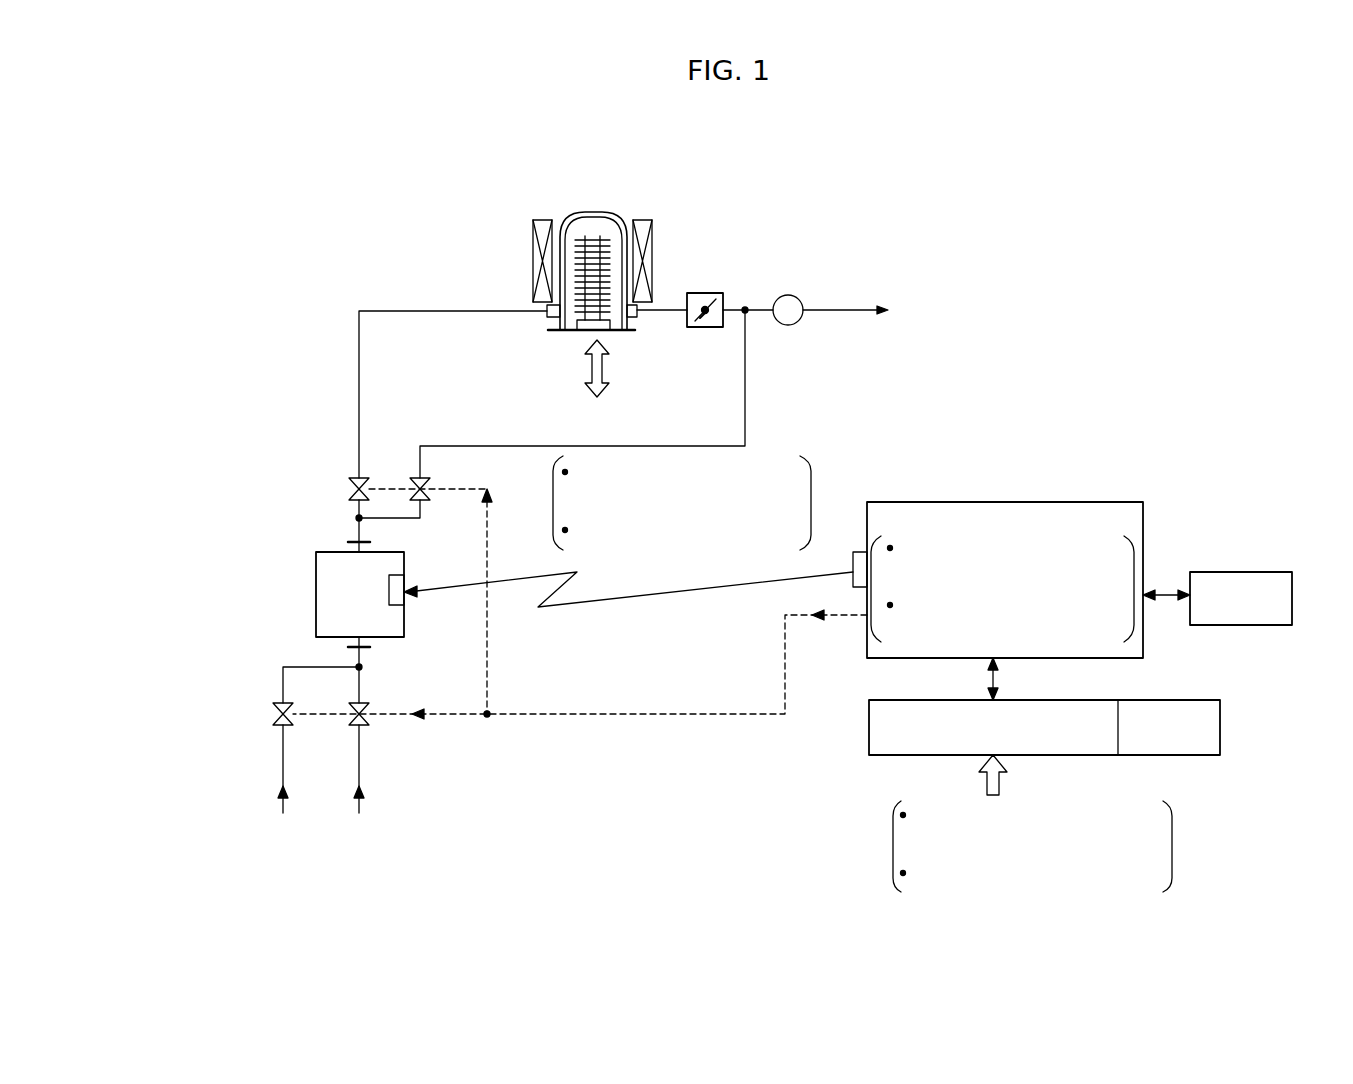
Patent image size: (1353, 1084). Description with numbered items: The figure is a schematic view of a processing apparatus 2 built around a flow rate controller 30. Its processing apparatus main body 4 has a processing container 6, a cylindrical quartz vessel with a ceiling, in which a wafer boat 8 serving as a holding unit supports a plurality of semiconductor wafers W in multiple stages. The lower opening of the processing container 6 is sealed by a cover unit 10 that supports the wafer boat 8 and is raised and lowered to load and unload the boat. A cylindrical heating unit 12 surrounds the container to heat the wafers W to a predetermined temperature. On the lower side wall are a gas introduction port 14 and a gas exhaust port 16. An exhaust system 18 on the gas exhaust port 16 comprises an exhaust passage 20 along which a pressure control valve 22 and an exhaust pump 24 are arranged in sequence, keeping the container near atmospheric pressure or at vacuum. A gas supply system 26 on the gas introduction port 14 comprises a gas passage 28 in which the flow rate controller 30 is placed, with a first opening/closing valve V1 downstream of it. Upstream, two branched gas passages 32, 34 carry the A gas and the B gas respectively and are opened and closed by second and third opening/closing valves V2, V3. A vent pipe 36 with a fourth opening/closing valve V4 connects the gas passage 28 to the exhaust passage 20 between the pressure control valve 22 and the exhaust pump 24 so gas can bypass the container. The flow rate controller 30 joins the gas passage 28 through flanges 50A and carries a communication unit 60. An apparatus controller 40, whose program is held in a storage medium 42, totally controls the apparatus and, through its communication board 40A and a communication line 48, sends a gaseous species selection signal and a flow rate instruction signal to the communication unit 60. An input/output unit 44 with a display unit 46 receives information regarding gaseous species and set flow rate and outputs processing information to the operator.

The processing apparatus 2 is at (196, 894).
The processing apparatus main body 4 is at (650, 207).
The processing container 6 is at (596, 212).
The wafer boat 8 is at (582, 238).
The cover unit 10 is at (614, 331).
The heating unit 12 is at (532, 246).
The gas introduction port 14 is at (548, 318).
The gas exhaust port 16 is at (636, 318).
The exhaust system 18 is at (792, 274).
The exhaust passage 20 is at (840, 312).
The pressure control valve 22 is at (710, 294).
The exhaust pump 24 is at (788, 326).
The gas supply system 26 is at (296, 413).
The gas passage 28 is at (378, 310).
The flow rate controller 30 is at (316, 578).
The branched gas passage 32 is at (363, 765).
The branched gas passage 34 is at (283, 684).
The vent pipe 36 is at (588, 446).
The apparatus controller 40 is at (1068, 502).
The communication board 40A is at (850, 552).
The storage medium 42 is at (1232, 572).
The input/output unit 44 is at (885, 757).
The display unit 46 is at (1182, 757).
The communication line 48 is at (588, 606).
The flange 50A is at (374, 544).
The communication unit 60 is at (404, 580).
The first opening/closing valve V1 is at (349, 480).
The second opening/closing valve V2 is at (367, 724).
The third opening/closing valve V3 is at (276, 724).
The fourth opening/closing valve V4 is at (428, 479).
The semiconductor wafer W is at (612, 263).